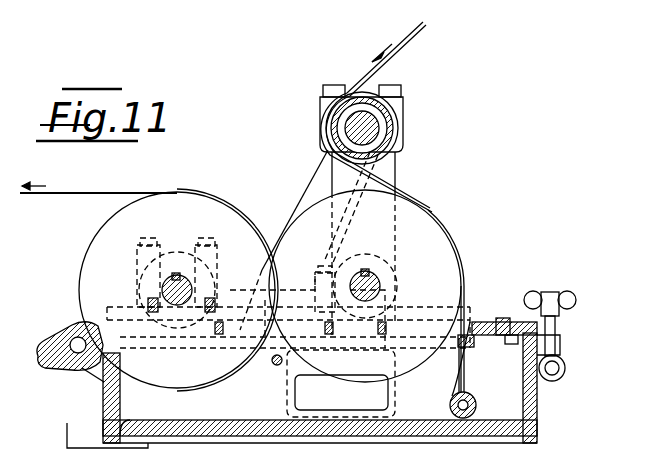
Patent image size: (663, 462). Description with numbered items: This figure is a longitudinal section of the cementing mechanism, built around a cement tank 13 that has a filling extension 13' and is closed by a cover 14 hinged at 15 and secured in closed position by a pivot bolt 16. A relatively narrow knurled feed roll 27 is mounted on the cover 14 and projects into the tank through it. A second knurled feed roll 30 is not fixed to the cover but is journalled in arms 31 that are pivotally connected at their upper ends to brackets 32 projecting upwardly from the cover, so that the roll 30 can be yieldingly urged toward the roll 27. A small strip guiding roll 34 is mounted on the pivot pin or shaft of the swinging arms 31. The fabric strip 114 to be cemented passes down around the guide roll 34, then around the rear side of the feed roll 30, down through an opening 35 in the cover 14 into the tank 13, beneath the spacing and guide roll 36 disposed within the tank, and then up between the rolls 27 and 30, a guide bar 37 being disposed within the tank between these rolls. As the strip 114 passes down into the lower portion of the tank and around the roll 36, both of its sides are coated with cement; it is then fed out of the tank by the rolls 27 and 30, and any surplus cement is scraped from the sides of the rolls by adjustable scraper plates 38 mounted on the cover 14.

The cement tank 13 is at (318, 390).
The filling extension 13' is at (324, 383).
The cover 14 is at (495, 322).
The hinge 15 is at (66, 344).
The pivot bolt 16 is at (556, 340).
The feed roll 27 is at (101, 243).
The second knurled feed roll 30 is at (438, 246).
The arms 31 is at (397, 176).
The brackets 32 is at (297, 209).
The strip guiding roll 34 is at (366, 96).
The opening 35 is at (466, 328).
The spacing and guide roll 36 is at (456, 400).
The guide bar 37 is at (274, 365).
The scraper plates 38 is at (300, 290).
The strip 114 is at (72, 193).